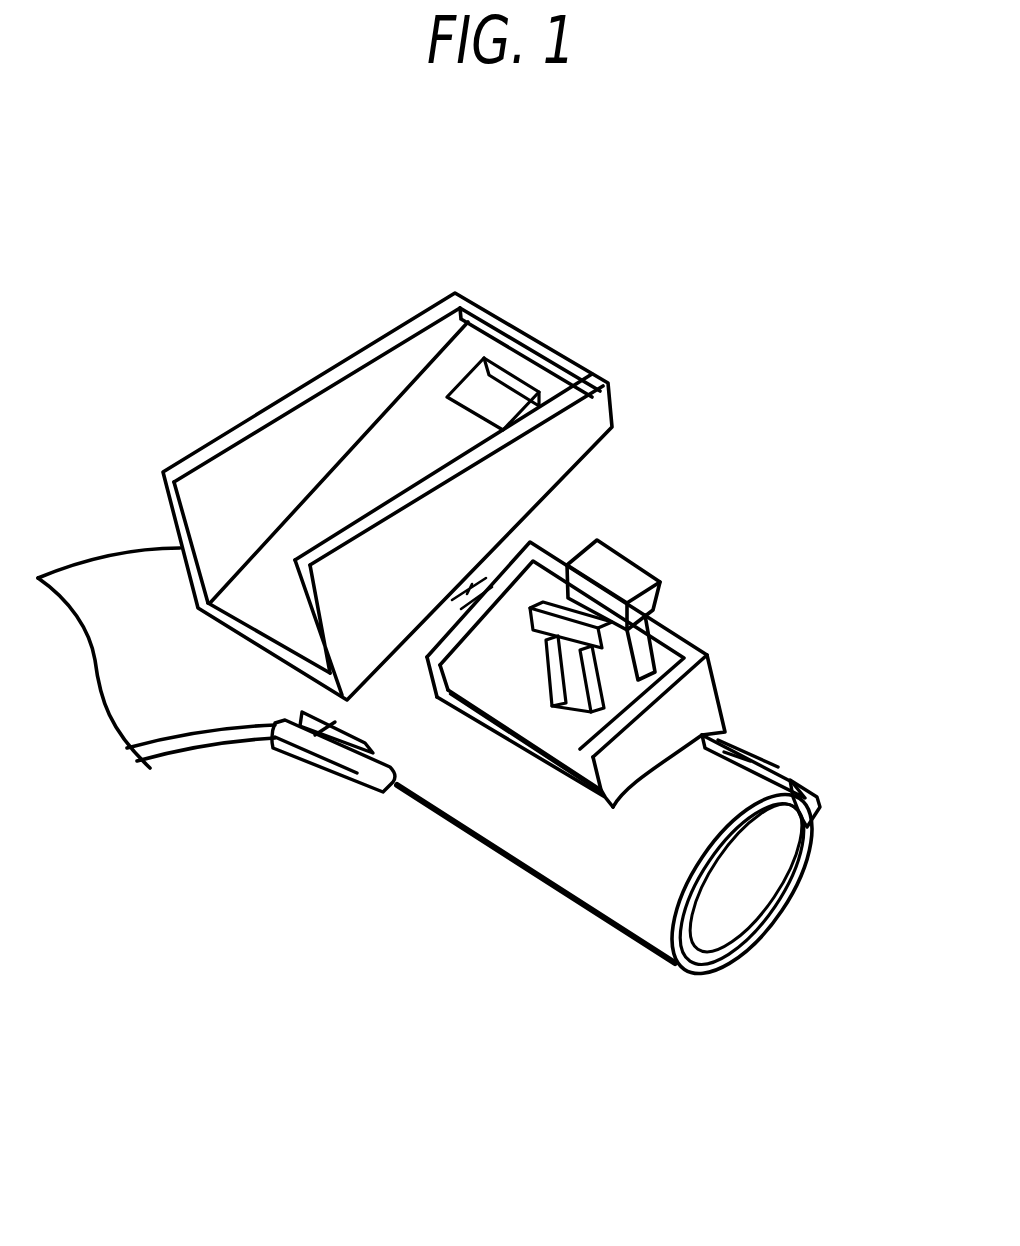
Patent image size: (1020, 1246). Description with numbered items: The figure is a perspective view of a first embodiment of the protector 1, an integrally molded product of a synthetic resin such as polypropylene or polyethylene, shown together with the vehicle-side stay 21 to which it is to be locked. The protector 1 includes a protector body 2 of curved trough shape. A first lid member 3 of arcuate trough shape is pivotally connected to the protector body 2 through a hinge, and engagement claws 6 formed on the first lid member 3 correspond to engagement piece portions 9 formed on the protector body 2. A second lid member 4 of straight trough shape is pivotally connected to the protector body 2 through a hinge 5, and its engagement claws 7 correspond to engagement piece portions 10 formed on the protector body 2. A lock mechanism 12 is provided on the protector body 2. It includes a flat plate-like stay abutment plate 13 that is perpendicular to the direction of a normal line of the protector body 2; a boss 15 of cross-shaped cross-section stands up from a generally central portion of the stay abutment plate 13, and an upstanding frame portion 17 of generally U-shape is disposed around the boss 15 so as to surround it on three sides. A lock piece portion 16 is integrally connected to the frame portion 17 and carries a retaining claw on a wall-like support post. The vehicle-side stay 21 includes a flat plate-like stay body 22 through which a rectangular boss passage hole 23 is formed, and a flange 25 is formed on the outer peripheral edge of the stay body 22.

The protector 1 is at (860, 463).
The protector body 2 is at (122, 590).
The first lid member 3 is at (172, 750).
The second lid member 4 is at (750, 937).
The hinge 5 is at (615, 928).
The engagement claws 6 is at (306, 742).
The engagement claws 7 is at (760, 757).
The engagement piece portions 9 is at (357, 782).
The engagement piece portions 10 is at (798, 788).
The lock mechanism 12 is at (672, 489).
The stay abutment plate 13 is at (587, 735).
The boss 15 is at (547, 690).
The lock piece portion 16 is at (612, 568).
The frame portion 17 is at (705, 685).
The vehicle-side stay 21 is at (566, 249).
The stay body 22 is at (363, 477).
The boss passage hole 23 is at (468, 392).
The flange 25 is at (258, 420).